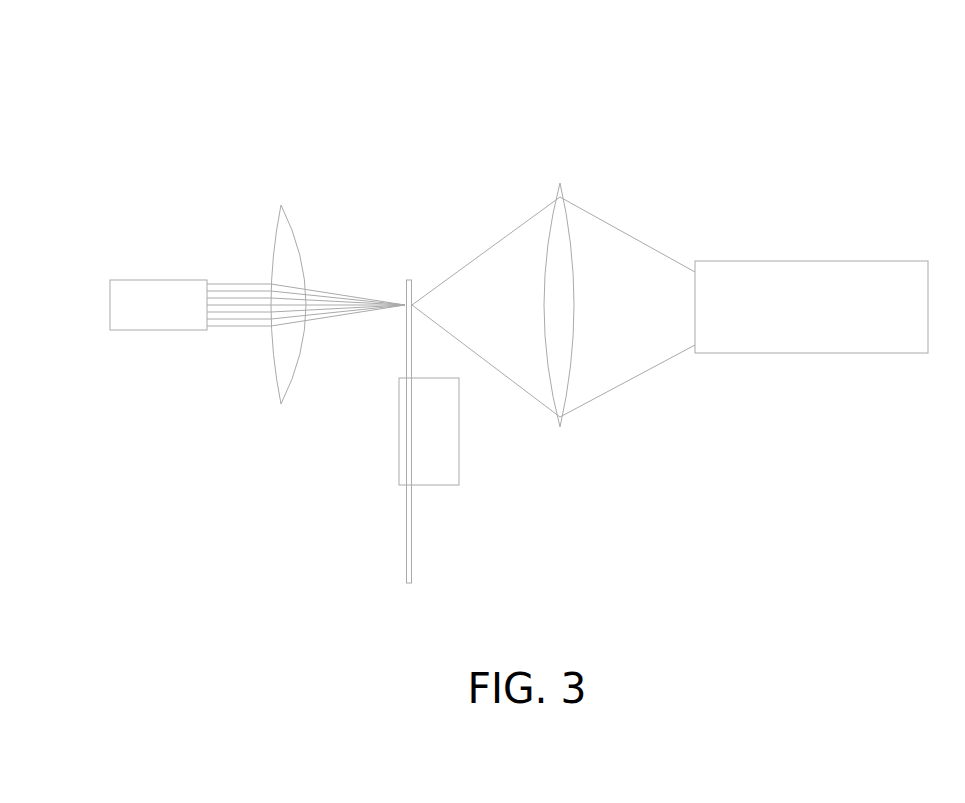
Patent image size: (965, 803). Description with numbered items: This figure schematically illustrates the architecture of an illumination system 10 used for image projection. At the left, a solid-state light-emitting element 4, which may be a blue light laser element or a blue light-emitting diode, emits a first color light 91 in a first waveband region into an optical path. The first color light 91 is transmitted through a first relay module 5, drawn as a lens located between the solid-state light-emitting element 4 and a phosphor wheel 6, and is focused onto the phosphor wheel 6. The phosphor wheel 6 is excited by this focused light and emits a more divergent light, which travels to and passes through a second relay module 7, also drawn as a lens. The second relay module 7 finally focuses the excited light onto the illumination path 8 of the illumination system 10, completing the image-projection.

The illumination system 10 is at (956, 97).
The solid-state light-emitting element 4 is at (149, 293).
The first color light 91 is at (236, 332).
The first relay module 5 is at (283, 248).
The phosphor wheel 6 is at (411, 552).
The second relay module 7 is at (558, 225).
The illumination path 8 is at (788, 280).